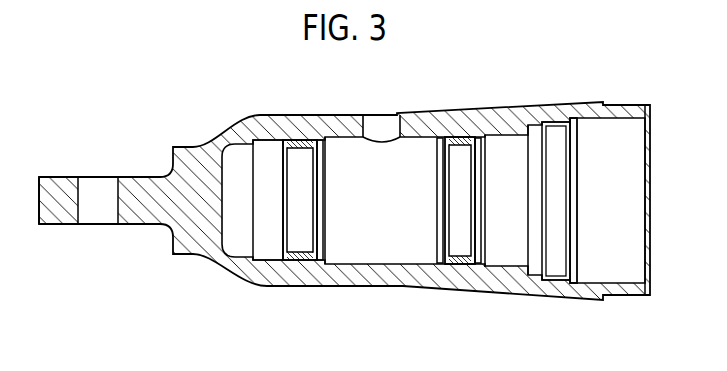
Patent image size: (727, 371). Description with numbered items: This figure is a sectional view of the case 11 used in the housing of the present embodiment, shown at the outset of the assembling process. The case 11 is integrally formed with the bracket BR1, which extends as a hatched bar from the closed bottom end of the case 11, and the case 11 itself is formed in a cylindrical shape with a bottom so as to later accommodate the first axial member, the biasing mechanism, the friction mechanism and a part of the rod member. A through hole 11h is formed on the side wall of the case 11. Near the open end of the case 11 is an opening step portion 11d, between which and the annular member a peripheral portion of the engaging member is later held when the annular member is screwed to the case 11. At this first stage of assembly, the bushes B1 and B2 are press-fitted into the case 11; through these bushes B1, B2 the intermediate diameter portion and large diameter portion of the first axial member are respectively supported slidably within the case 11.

The case 11 is at (455, 113).
The through hole 11h is at (368, 116).
The opening step portion 11d is at (535, 275).
The bracket BR1 is at (56, 187).
The bush B1 is at (295, 261).
The bush B2 is at (462, 264).